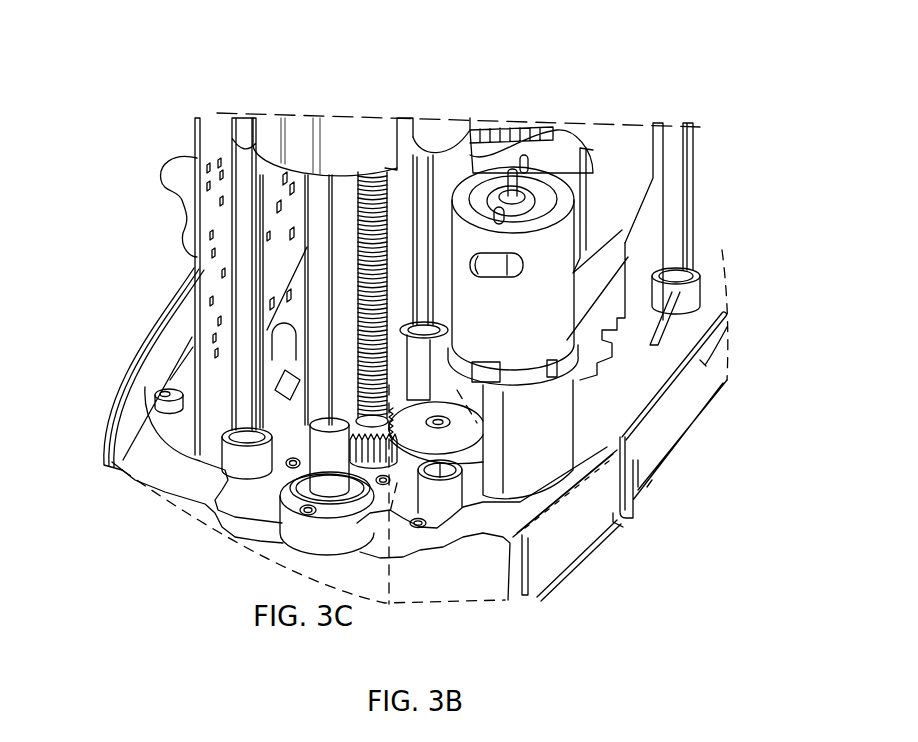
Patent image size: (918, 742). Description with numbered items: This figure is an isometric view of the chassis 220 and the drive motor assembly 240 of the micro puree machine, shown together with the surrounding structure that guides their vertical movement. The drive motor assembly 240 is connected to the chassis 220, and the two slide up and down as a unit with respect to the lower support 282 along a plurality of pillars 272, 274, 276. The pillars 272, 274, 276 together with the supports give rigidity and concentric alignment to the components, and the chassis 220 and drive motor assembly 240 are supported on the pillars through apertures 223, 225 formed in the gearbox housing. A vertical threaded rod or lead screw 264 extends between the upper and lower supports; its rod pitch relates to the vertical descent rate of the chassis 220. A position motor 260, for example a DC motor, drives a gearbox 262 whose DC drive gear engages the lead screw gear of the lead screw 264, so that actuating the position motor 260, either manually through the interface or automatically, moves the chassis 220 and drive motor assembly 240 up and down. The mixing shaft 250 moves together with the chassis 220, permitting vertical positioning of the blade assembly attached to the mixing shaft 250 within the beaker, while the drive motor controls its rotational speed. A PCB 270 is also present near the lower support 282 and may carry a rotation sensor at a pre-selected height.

The chassis 220 is at (303, 137).
The aperture 223 is at (237, 133).
The aperture 225 is at (396, 115).
The drive motor assembly 240 is at (630, 153).
The mixing shaft 250 is at (320, 358).
The position motor 260 is at (560, 290).
The gearbox 262 is at (553, 393).
The lead screw 264 is at (358, 133).
The PCB 270 is at (212, 156).
The pillar 272 is at (243, 271).
The pillar 274 is at (450, 153).
The pillar 276 is at (680, 180).
The lower support 282 is at (703, 367).